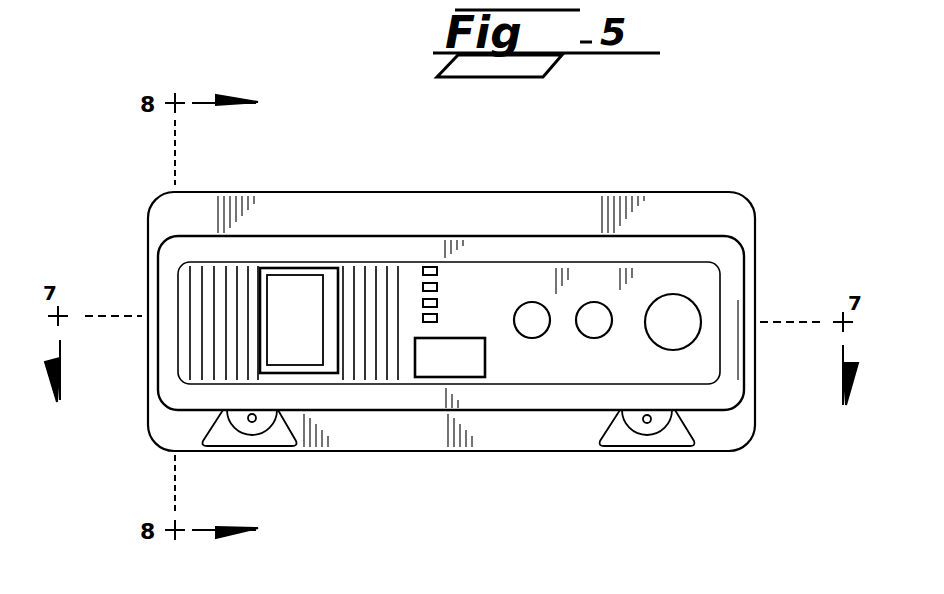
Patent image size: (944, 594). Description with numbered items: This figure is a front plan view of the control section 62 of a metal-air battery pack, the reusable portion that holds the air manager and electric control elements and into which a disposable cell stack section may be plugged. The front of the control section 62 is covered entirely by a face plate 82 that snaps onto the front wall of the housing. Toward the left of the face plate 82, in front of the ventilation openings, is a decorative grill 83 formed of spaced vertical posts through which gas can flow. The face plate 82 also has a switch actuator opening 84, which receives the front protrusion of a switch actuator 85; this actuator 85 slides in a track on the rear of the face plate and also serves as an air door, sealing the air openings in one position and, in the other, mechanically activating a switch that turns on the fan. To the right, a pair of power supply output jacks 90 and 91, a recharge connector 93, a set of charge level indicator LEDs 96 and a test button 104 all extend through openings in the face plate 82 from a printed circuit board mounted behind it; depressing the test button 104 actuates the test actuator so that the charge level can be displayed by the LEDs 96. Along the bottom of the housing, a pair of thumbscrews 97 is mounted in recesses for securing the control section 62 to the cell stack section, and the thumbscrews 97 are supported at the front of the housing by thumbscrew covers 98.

The control section 62 is at (684, 174).
The face plate 82 is at (738, 215).
The decorative grill 83 is at (217, 277).
The switch actuator opening 84 is at (334, 296).
The switch actuator 85 is at (311, 336).
The power supply output jack 90 is at (530, 302).
The power supply output jack 91 is at (580, 325).
The recharge connector 93 is at (686, 348).
The charge level indicator LEDs 96 is at (439, 318).
The thumbscrews 97 is at (248, 438).
The thumbscrew covers 98 is at (288, 440).
The test button 104 is at (487, 357).